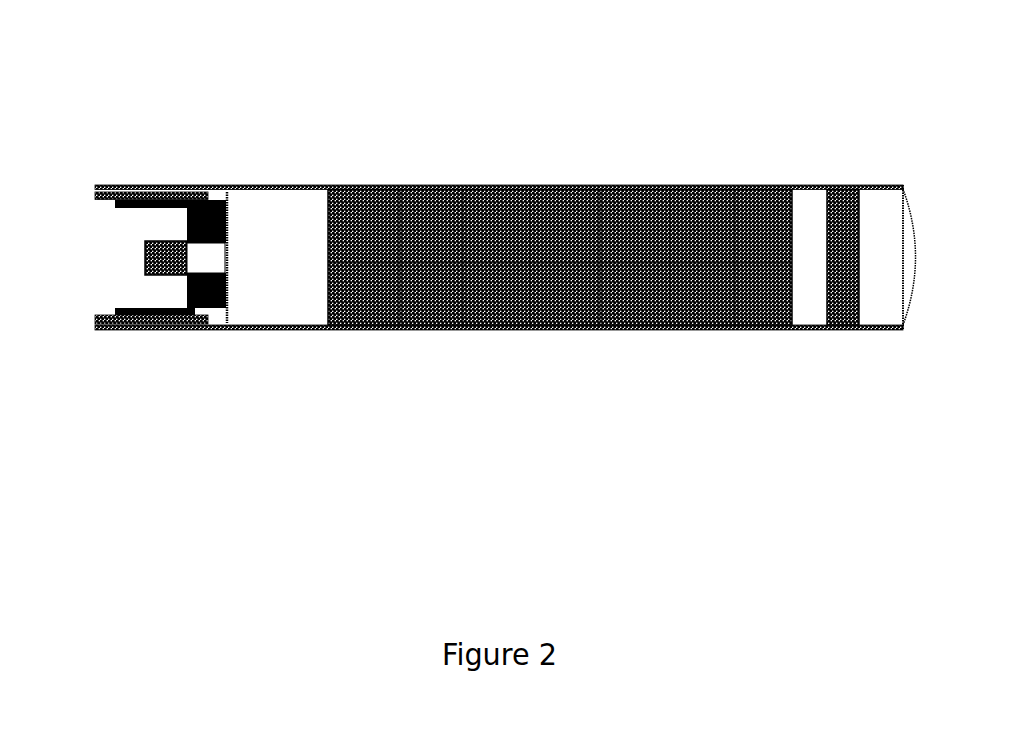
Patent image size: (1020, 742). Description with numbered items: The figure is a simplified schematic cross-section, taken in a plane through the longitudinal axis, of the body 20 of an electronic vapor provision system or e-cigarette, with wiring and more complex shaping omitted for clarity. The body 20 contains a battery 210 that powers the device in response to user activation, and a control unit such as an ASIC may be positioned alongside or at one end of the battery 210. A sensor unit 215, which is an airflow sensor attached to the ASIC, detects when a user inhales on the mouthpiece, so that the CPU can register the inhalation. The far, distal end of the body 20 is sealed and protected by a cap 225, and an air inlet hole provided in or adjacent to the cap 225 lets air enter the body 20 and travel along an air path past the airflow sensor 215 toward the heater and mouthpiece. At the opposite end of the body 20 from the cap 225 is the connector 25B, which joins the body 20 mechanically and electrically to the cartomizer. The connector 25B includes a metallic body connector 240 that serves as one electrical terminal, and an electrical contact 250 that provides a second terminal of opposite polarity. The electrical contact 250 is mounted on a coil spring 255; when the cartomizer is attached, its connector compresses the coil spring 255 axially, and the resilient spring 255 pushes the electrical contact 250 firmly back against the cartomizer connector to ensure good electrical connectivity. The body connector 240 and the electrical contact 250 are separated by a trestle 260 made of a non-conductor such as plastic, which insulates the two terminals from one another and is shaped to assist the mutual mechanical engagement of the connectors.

The body 20 is at (499, 385).
The connector 25B is at (129, 128).
The battery 210 is at (560, 217).
The sensor unit 215 is at (790, 184).
The cap 225 is at (873, 184).
The body connector 240 is at (115, 382).
The electrical contact 250 is at (119, 373).
The coil spring 255 is at (157, 412).
The trestle 260 is at (209, 207).